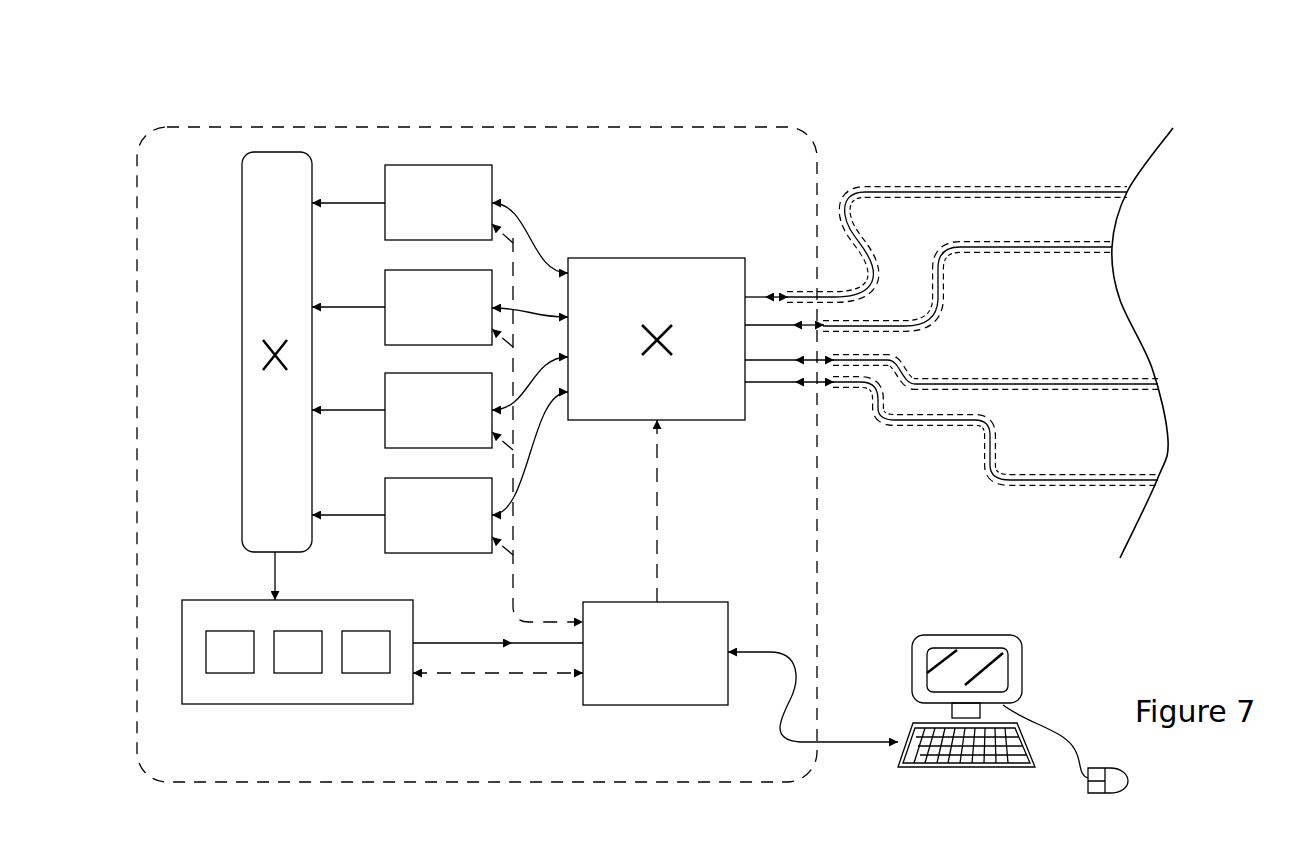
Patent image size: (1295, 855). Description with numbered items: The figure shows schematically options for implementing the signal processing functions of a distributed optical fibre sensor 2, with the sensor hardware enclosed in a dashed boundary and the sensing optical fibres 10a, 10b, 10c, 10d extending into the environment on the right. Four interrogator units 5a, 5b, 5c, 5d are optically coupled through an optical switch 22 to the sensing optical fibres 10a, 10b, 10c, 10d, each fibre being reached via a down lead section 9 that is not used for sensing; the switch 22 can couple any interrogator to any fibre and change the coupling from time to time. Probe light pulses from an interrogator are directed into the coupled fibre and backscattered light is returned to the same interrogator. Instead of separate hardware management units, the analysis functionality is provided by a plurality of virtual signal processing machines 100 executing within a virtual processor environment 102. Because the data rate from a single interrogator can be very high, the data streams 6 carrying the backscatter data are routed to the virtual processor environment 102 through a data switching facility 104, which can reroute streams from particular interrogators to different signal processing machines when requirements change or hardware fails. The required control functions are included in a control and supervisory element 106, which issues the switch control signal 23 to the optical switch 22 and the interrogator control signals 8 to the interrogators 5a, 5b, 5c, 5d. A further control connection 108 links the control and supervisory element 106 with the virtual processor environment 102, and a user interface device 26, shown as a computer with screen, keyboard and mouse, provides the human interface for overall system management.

The distributed optical fibre sensor 2 is at (687, 128).
The data switching facility 104 is at (270, 153).
The interrogator unit 5a is at (492, 172).
The interrogator unit 5b is at (385, 280).
The interrogator unit 5c is at (385, 388).
The interrogator unit 5d is at (385, 537).
The optical switch 22 is at (678, 258).
The down lead section 9 is at (758, 296).
The switch control signal 23 is at (657, 483).
The interrogator control signal 8 is at (513, 583).
The data stream 6 is at (273, 567).
The virtual signal processing machine 100 is at (212, 675).
The virtual processor environment 102 is at (323, 681).
The control and supervisory element 106 is at (683, 705).
The control connection 108 is at (545, 675).
The user interface device 26 is at (1022, 652).
The sensing optical fibre 10a is at (998, 192).
The sensing optical fibre 10b is at (1037, 247).
The sensing optical fibre 10c is at (1055, 383).
The sensing optical fibre 10d is at (1072, 480).